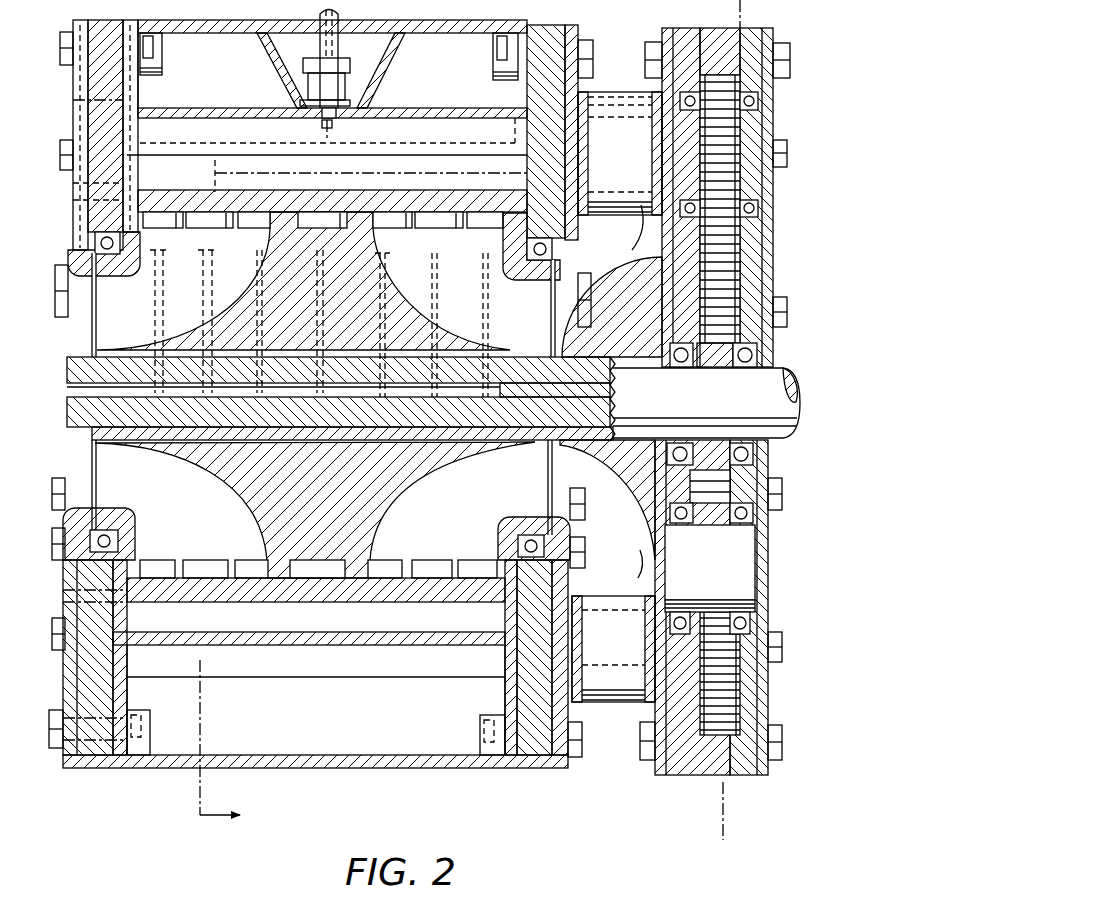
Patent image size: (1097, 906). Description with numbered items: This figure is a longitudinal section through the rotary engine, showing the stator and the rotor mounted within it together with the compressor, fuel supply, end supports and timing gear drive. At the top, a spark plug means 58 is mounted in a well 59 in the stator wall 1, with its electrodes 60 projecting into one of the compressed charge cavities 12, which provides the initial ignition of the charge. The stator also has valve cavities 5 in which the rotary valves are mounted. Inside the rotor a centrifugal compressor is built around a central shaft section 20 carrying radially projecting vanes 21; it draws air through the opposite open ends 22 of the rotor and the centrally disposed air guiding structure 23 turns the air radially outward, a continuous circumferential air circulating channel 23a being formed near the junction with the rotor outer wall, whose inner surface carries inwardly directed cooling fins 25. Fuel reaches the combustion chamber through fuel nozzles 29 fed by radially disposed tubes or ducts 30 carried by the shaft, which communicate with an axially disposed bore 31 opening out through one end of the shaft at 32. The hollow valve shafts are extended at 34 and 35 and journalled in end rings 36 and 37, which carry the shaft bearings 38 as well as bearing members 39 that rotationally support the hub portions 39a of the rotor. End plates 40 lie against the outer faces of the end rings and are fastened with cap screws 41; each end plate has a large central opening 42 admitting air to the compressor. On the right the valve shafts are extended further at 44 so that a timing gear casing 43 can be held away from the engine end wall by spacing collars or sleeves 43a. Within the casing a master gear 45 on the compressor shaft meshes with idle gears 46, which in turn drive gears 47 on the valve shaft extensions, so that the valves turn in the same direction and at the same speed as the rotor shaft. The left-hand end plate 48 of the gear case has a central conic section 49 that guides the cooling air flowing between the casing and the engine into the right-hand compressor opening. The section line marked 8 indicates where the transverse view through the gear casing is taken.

The stator wall 1 is at (338, 30).
The valve cavities 5 is at (170, 763).
The section line 8- 8 is at (765, 17).
The compressed charge cavity 12 is at (393, 132).
The central shaft section 20 is at (80, 408).
The radially projecting vanes 21 is at (229, 529).
The open ends 22 is at (550, 316).
The air guiding structure 23 is at (248, 300).
The circumferential air circulating channel 23a is at (346, 203).
The cooling fins 25 is at (410, 234).
The fuel nozzles 29 is at (288, 323).
The radially-disposed tubes or ducts 30 is at (205, 305).
The axially disposed bore 31 is at (455, 440).
The bore opening 32 is at (264, 395).
The shaft extension 34 is at (88, 121).
The shaft extension 35 is at (624, 112).
The end ring 36 is at (100, 147).
The end ring 37 is at (536, 170).
The shaft bearings 38 is at (95, 205).
The bearing members 39 is at (95, 240).
The hub portions 39a is at (107, 262).
The end plates 40 is at (63, 607).
The cap screws 41 is at (63, 723).
The central opening 42 is at (83, 328).
The timing gear casing 43 is at (642, 772).
The spacing collars or sleeves 43a is at (607, 391).
The shaft extensions 44 is at (770, 100).
The master gear 45 is at (712, 362).
The idle gears 46 is at (778, 312).
The driven gears 47 is at (728, 173).
The left-hand end plate of the gear case 48 is at (660, 634).
The conic section 49 is at (620, 336).
The spark plug means 58 is at (320, 36).
The well 59 is at (278, 53).
The electrodes 60 is at (320, 125).